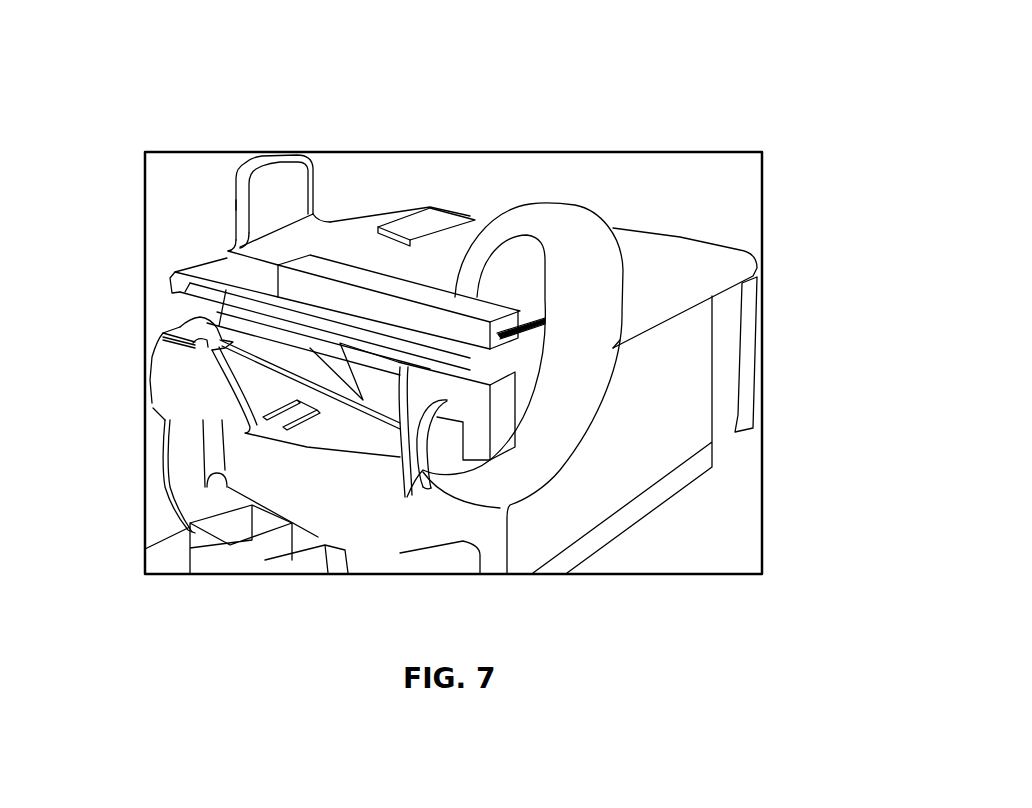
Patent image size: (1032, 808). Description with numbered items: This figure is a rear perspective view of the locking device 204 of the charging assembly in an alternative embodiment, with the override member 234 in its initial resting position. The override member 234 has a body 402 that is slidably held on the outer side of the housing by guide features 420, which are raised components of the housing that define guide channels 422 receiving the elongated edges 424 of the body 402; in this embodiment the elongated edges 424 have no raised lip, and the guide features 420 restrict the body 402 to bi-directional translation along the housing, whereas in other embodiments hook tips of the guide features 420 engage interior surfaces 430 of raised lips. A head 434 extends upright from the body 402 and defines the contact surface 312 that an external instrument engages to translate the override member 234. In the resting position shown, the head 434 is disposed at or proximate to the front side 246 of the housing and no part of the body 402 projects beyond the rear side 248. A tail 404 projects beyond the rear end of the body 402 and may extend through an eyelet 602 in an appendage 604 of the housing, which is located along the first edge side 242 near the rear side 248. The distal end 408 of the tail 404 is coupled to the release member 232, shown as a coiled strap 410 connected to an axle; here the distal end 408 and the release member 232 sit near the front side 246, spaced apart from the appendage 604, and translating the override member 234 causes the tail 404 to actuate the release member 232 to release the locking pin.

The locking device 204 is at (450, 152).
The release member 232 is at (196, 332).
The override member 234 is at (563, 213).
The first edge side 242 is at (387, 397).
The front side 246 is at (171, 278).
The rear side 248 is at (633, 335).
The contact surface 312 is at (237, 203).
The body 402 is at (455, 283).
The tail 404 is at (593, 247).
The distal end 408 is at (201, 345).
The coiled strap 410 is at (173, 445).
The guide features 420 is at (345, 267).
The guide channels 422 is at (518, 341).
The elongated edges 424 is at (267, 268).
The interior surfaces 430 is at (667, 257).
The head 434 is at (265, 173).
The eyelet 602 is at (428, 485).
The appendage 604 is at (417, 487).